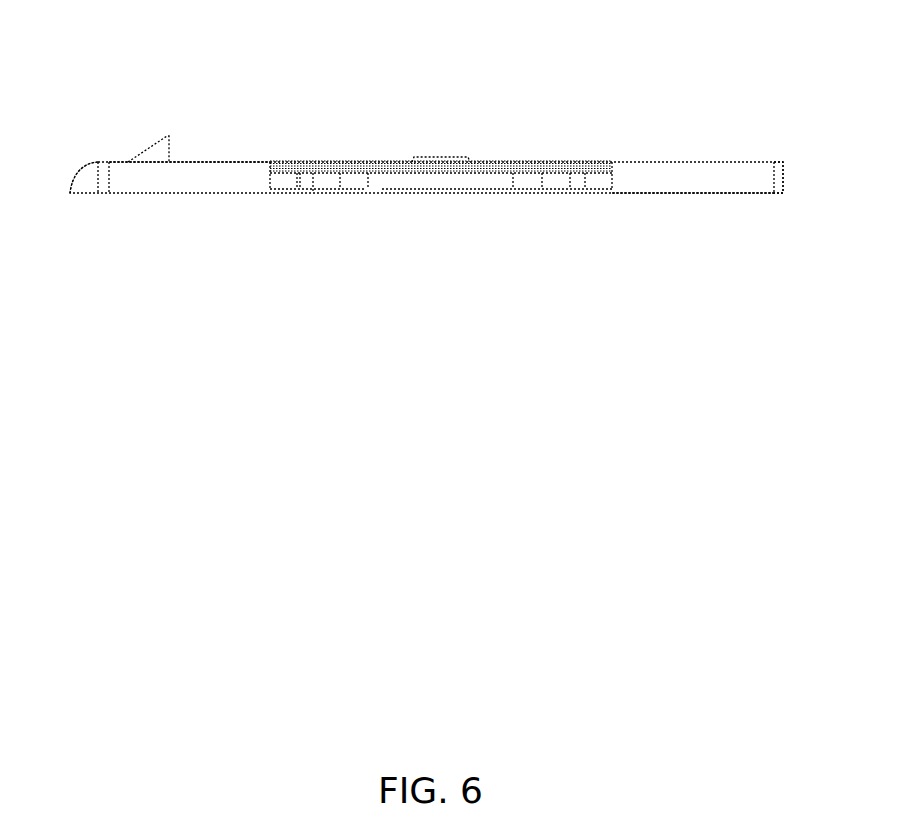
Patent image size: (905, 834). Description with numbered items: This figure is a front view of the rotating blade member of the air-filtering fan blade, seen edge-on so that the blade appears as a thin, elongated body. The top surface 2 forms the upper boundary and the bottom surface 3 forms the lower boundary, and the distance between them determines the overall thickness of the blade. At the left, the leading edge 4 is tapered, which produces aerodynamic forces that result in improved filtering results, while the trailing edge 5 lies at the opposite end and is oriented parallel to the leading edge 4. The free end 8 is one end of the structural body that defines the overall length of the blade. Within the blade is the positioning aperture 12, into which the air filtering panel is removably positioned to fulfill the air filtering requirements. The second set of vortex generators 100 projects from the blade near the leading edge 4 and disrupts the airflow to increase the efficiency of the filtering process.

The top surface 2 is at (664, 114).
The bottom surface 3 is at (681, 226).
The leading edge 4 is at (74, 178).
The trailing edge 5 is at (783, 178).
The free end 8 is at (180, 183).
The positioning aperture 12 is at (368, 160).
The second set of vortex generators 100 is at (168, 146).